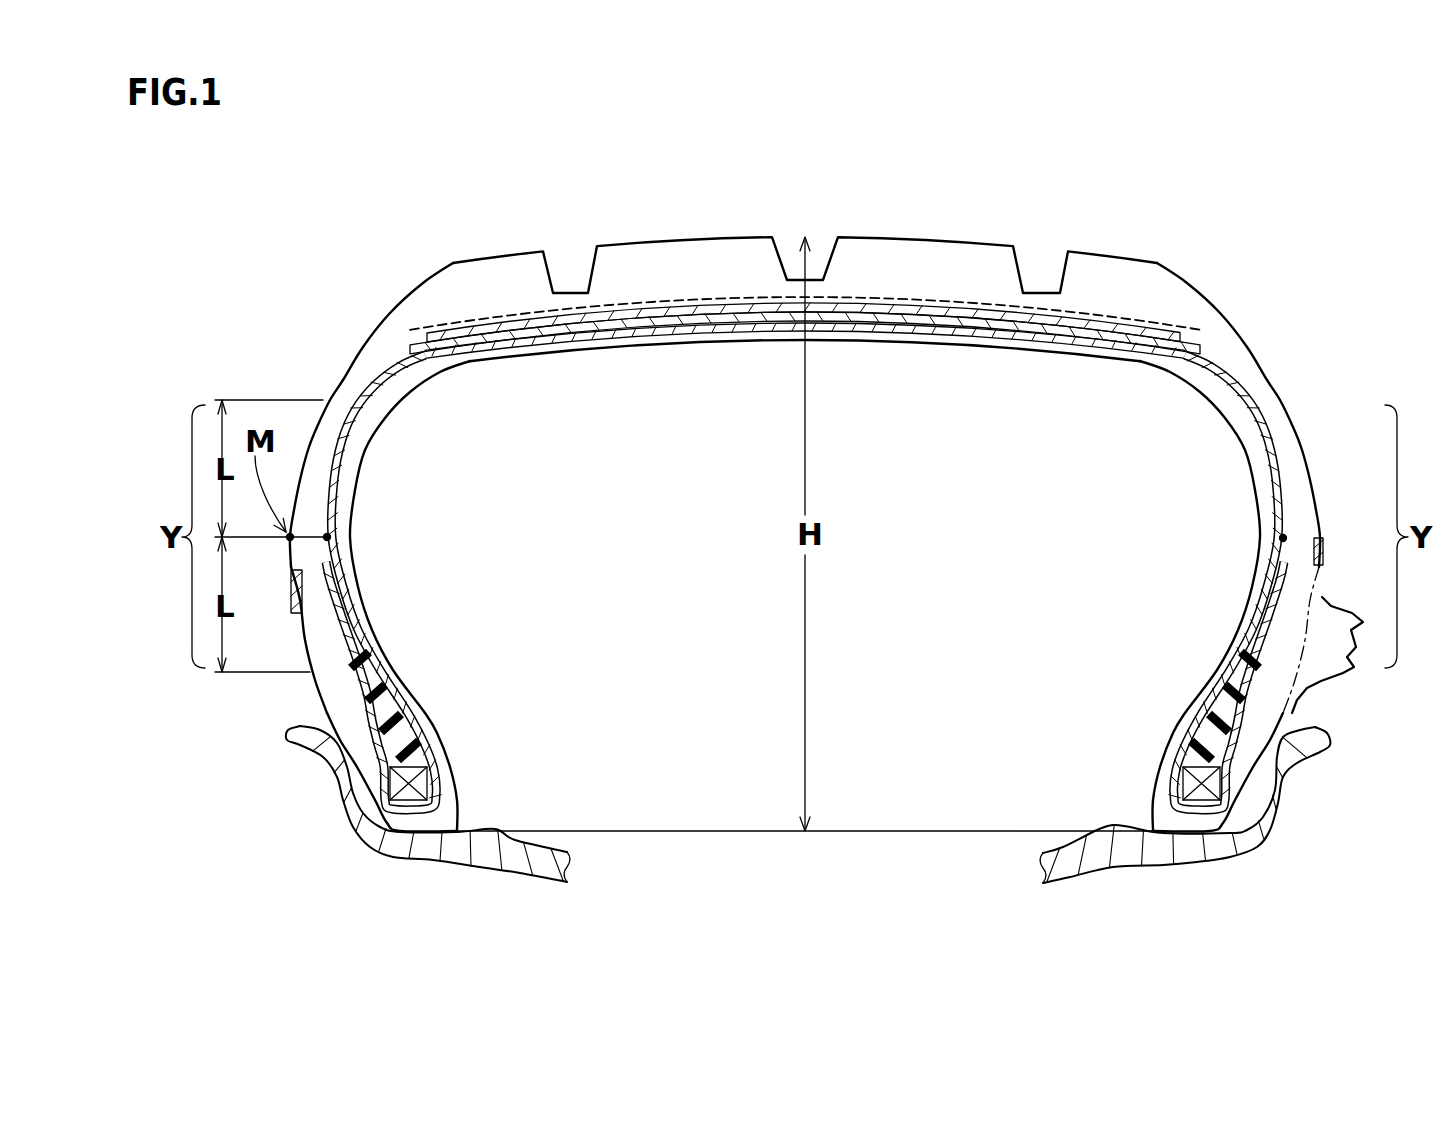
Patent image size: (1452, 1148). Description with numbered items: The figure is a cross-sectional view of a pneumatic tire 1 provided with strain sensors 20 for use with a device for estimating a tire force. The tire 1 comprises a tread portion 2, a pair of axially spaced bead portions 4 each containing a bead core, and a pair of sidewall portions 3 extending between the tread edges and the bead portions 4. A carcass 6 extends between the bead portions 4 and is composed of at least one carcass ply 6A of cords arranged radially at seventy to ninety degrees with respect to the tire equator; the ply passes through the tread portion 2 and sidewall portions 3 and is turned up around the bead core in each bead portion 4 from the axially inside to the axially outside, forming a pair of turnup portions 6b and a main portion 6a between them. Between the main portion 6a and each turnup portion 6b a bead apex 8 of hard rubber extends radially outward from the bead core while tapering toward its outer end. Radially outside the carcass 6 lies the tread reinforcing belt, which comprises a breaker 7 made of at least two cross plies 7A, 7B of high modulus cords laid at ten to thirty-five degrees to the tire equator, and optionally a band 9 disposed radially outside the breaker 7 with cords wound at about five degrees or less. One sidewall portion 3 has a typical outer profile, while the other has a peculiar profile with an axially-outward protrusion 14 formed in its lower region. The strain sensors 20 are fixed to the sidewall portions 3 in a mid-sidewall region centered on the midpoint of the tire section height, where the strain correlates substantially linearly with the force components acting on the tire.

The pneumatic tire 1 is at (310, 341).
The tread portion 2 is at (680, 232).
The sidewall portions 3 is at (390, 520).
The bead portions 4 is at (496, 722).
The carcass 6 is at (805, 566).
The carcass ply 6A is at (549, 565).
The main portion 6a is at (356, 678).
The turnup portions 6b is at (372, 698).
The breaker 7 is at (805, 415).
The first breaker ply 7A is at (641, 333).
The second breaker ply 7B is at (700, 345).
The bead apex 8 is at (396, 748).
The band 9 is at (742, 297).
The protrusion 14 is at (1335, 655).
The strain sensor 20 is at (297, 595).